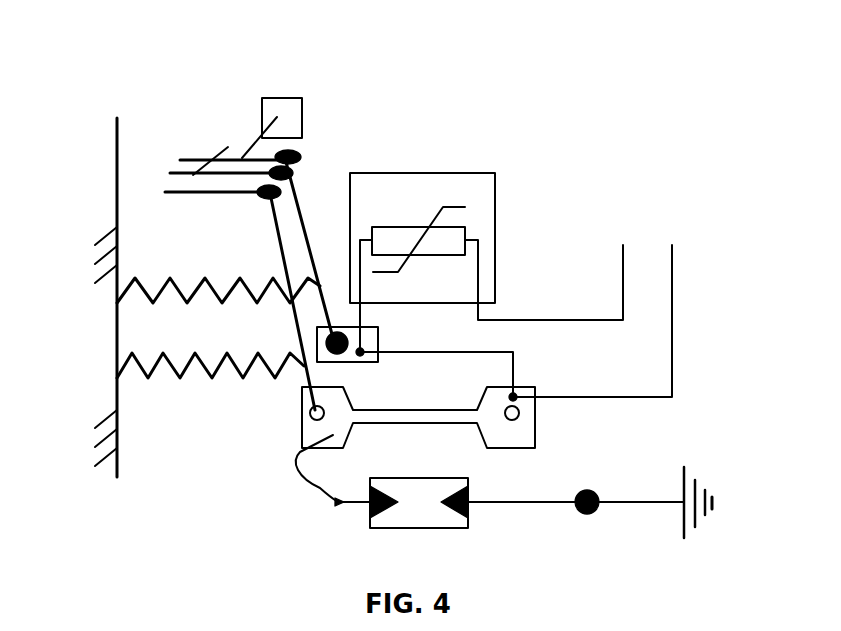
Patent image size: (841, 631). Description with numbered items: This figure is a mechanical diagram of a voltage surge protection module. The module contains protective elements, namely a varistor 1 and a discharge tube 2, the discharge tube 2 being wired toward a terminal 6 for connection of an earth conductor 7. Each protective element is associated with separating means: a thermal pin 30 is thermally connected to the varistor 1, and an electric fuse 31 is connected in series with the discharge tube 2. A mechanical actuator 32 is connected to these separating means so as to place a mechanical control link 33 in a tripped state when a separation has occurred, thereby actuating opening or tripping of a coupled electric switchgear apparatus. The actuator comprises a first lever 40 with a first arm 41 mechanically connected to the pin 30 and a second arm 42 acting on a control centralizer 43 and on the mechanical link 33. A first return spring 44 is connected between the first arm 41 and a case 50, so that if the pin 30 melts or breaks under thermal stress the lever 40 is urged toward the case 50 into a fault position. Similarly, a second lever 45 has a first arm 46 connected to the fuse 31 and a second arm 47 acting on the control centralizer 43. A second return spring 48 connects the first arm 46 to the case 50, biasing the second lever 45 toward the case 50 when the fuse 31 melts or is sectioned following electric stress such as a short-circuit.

The varistor 1 is at (422, 200).
The discharge tube 2 is at (405, 512).
The terminal 6 is at (590, 514).
The earth conductor 7 is at (612, 502).
The thermal pin 30 is at (318, 341).
The electric fuse 31 is at (484, 375).
The mechanical actuator 32 is at (235, 263).
The mechanical control link 33 is at (257, 140).
The first lever 40 is at (298, 198).
The first arm 41 is at (308, 266).
The second arm 42 is at (178, 173).
The control centralizer 43 is at (203, 158).
The first return spring 44 is at (178, 283).
The second lever 45 is at (272, 234).
The first arm 46 is at (302, 370).
The second arm 47 is at (216, 194).
The second return spring 48 is at (173, 382).
The case 50 is at (117, 333).